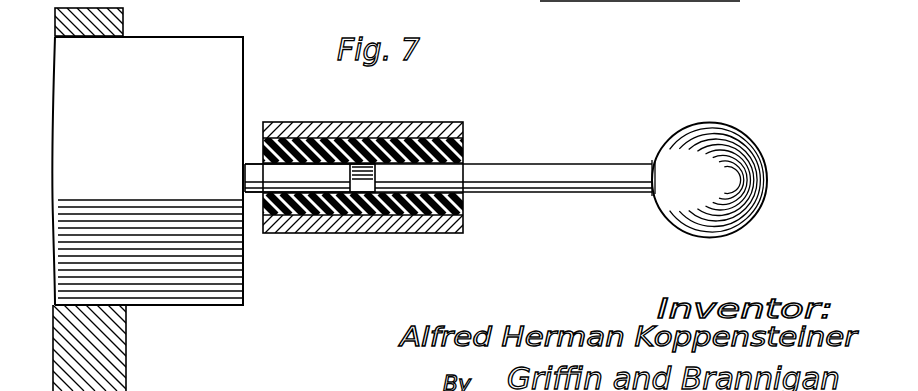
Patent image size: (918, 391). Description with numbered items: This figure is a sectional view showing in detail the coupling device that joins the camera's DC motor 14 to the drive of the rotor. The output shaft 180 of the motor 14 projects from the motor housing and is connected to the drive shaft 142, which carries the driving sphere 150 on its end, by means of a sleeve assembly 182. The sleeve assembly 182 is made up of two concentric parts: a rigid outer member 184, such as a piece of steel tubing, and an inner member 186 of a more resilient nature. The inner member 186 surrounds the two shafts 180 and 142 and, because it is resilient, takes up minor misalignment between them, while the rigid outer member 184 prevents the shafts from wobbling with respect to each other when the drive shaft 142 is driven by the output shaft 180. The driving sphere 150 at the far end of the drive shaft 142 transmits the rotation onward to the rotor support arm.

The DC motor 14 is at (210, 37).
The output shaft 180 is at (255, 160).
The sleeve assembly 182 is at (376, 166).
The rigid outer member 184 is at (465, 128).
The inner member 186 is at (465, 201).
The drive shaft 142 is at (450, 141).
The driving sphere 150 is at (717, 165).